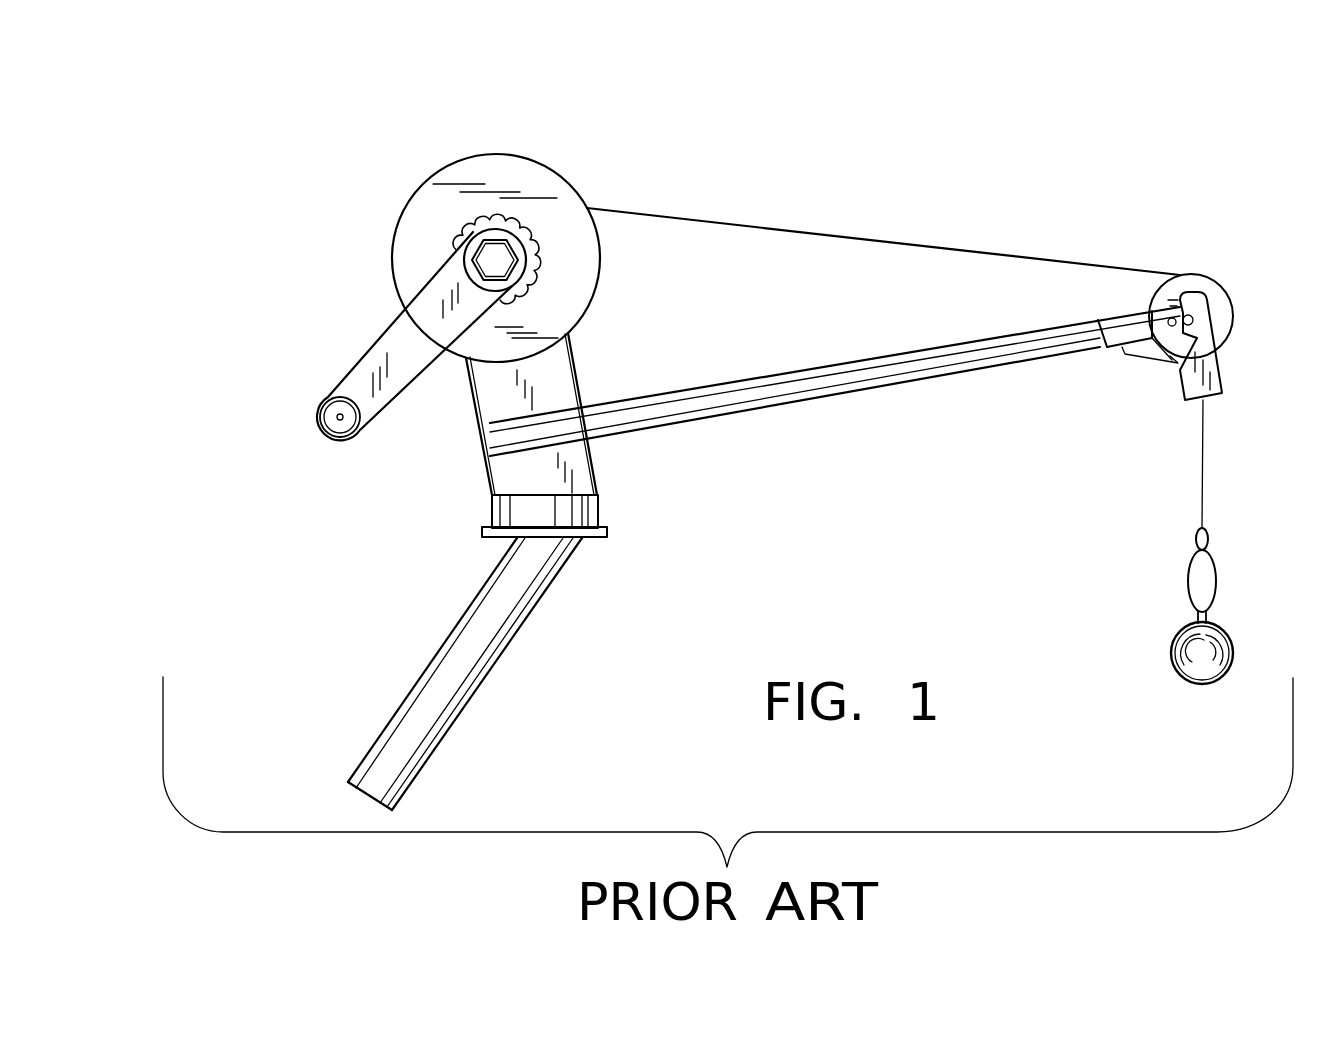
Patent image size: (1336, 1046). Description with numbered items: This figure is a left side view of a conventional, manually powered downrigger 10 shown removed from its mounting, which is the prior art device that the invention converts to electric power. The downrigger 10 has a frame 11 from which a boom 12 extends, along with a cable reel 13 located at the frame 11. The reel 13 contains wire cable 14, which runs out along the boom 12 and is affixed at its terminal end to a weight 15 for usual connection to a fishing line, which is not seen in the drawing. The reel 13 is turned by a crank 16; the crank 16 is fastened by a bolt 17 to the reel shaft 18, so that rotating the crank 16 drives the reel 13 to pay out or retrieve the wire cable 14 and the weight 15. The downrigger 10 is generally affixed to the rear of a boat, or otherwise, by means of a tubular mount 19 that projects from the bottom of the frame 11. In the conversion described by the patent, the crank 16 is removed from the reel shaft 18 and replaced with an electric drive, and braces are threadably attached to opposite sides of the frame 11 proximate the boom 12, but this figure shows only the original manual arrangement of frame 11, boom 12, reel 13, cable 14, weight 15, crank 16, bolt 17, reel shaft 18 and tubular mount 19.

The manually powered downrigger 10 is at (753, 132).
The frame 11 is at (606, 364).
The boom 12 is at (828, 354).
The cable reel 13 is at (494, 165).
The wire cable 14 is at (908, 237).
The weight 15 is at (1149, 648).
The crank 16 is at (363, 338).
The bolt 17 is at (514, 247).
The reel shaft 18 is at (497, 260).
The tubular mount 19 is at (521, 660).